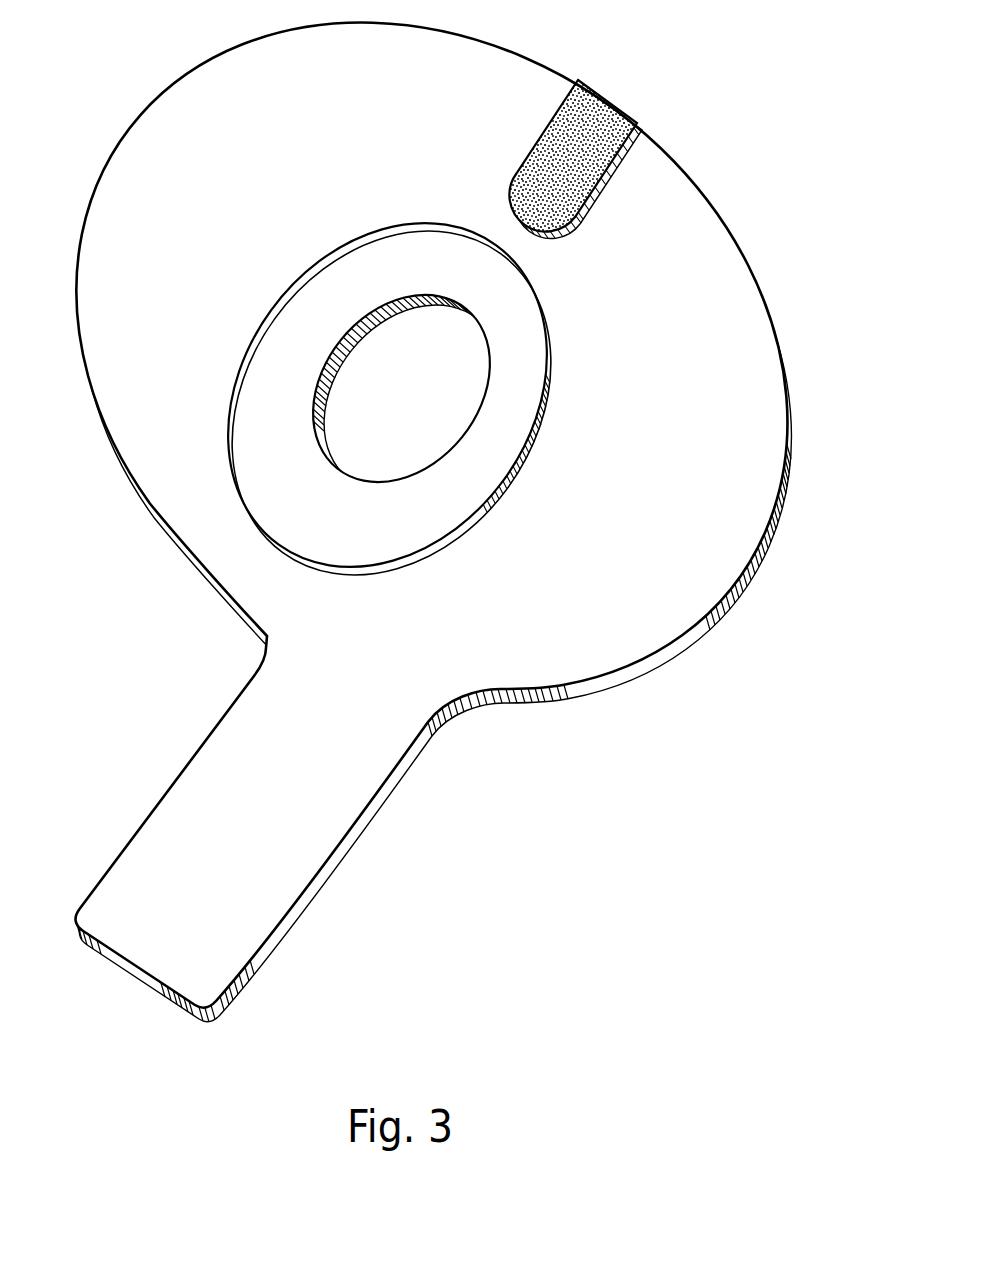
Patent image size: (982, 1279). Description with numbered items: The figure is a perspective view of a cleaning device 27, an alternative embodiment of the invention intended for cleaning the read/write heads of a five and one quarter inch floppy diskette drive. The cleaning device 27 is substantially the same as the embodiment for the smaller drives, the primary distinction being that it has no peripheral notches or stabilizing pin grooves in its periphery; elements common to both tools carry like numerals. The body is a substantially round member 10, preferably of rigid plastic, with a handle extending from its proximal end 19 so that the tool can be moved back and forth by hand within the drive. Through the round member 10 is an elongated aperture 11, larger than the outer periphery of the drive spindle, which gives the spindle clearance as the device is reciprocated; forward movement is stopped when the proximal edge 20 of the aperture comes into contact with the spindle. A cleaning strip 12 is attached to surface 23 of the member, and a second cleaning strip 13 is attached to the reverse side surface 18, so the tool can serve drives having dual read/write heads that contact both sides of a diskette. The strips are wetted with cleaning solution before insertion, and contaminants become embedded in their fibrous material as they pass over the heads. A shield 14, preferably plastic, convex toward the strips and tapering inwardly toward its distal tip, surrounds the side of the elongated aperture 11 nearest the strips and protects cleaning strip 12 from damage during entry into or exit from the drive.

The round member 10 is at (747, 358).
The elongated aperture 11 is at (399, 386).
The cleaning strip 12 is at (618, 108).
The cleaning strip 13 is at (603, 90).
The shield 14 is at (401, 528).
The reverse side surface 18 is at (687, 655).
The proximal end 19 is at (240, 601).
The proximal edge 20 is at (356, 478).
The surface 23 is at (693, 250).
The cleaning device 27 is at (649, 700).